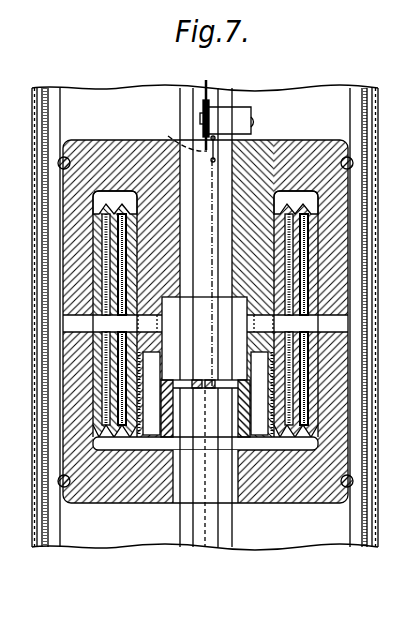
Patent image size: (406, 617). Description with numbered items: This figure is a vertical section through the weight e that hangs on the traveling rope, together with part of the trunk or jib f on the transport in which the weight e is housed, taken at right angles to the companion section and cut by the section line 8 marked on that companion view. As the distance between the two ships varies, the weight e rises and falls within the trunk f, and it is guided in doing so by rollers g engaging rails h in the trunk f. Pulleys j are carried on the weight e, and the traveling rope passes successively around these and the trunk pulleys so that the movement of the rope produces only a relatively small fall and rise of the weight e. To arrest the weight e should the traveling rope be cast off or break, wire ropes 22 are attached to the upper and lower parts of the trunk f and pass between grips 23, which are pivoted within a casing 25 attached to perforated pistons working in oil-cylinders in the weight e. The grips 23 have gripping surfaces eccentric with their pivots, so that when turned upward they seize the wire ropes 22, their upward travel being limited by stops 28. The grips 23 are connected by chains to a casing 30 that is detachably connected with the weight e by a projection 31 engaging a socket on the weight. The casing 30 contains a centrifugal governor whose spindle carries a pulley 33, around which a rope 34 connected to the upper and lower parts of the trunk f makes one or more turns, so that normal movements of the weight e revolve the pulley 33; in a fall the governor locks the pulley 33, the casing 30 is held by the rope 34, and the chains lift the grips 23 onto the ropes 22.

The rails h is at (55, 106).
The rollers g is at (67, 157).
The trunk or jib f is at (33, 268).
The frame wall 8 is at (27, 321).
The pulleys on the weight j is at (112, 234).
The weight e is at (122, 503).
The wire ropes 22 is at (232, 544).
The grips 23 is at (176, 428).
The casing 25 is at (243, 422).
The stops 28 is at (212, 385).
The casing 30 is at (249, 127).
The projection 31 is at (177, 135).
The pulley 33 is at (211, 100).
The rope 34 is at (204, 83).